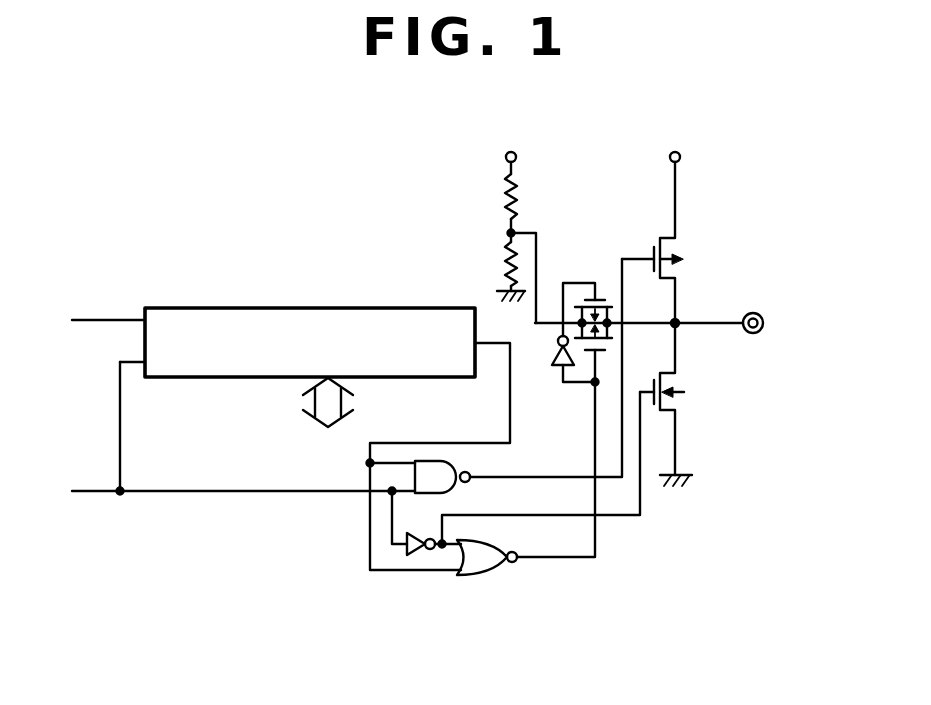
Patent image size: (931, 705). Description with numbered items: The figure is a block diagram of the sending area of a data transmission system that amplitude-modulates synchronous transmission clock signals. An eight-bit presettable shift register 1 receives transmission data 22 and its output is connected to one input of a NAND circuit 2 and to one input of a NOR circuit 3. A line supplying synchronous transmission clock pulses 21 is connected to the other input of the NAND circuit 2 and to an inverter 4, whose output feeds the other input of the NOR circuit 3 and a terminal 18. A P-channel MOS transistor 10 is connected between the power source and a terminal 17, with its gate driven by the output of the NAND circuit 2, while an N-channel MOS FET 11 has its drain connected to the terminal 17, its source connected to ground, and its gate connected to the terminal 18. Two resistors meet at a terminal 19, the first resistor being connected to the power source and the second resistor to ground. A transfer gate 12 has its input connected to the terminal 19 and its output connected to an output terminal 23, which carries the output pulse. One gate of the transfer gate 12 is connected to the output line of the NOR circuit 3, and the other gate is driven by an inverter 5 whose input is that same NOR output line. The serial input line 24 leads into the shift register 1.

The presettable shift register 1 is at (313, 306).
The NAND circuit 2 is at (465, 455).
The NOR circuit 3 is at (485, 577).
The inverter 4 is at (413, 556).
The inverter 5 is at (553, 349).
The P-channel MOS transistor 10 is at (683, 245).
The N-channel MOS FET 11 is at (683, 401).
The transfer gate 12 is at (608, 296).
The terminal 17 is at (680, 318).
The terminal 18 is at (455, 541).
The terminal 19 is at (508, 233).
The synchronous transmission clock pulse 21 is at (92, 493).
The transmission data 22 is at (508, 414).
The output terminal 23 is at (763, 315).
The serial input line 24 is at (108, 318).